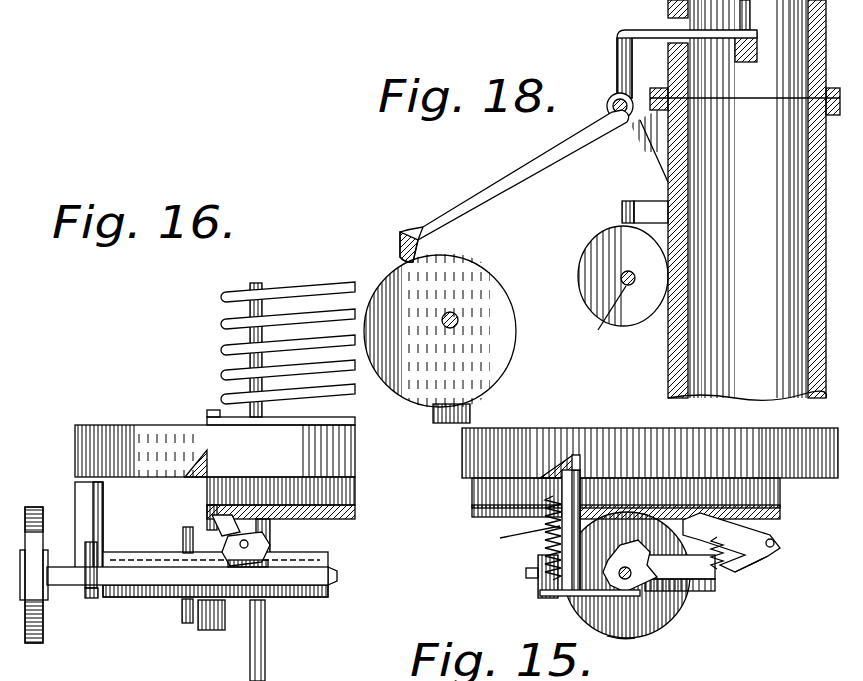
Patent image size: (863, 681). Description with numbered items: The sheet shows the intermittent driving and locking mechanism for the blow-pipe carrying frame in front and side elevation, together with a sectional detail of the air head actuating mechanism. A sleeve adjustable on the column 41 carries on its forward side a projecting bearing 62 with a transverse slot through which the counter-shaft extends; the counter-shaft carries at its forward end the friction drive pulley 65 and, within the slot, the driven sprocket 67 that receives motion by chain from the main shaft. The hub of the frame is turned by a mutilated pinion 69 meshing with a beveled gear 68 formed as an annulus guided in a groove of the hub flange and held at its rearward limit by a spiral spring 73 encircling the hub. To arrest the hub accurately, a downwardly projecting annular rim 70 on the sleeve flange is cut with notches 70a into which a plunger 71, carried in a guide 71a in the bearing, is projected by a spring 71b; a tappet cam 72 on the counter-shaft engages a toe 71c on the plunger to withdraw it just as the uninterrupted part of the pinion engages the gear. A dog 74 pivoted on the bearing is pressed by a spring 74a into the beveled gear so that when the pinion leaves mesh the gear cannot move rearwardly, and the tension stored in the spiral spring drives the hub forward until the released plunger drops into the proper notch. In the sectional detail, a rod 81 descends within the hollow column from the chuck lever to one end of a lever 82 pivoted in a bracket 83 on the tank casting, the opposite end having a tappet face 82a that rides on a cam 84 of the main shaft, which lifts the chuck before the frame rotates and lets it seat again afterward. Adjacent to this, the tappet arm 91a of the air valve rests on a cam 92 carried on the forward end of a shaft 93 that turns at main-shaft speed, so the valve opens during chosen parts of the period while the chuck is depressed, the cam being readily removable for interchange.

In FIG. 16, the column 41 is at (288, 288).
In FIG. 16, the projecting bearing 62 is at (150, 553).
In FIG. 15, the projecting bearing 62 is at (652, 634).
In FIG. 16, the friction drive pulley 65 is at (70, 592).
In FIG. 15, the friction drive pulley 65 is at (618, 638).
In FIG. 16, the driven sprocket 67 is at (180, 609).
In FIG. 16, the beveled gear 68 is at (348, 516).
In FIG. 15, the beveled gear 68 is at (626, 498).
In FIG. 16, the pinion 69 is at (211, 632).
In FIG. 15, the pinion 69 is at (668, 618).
In FIG. 16, the annular rim 70 is at (146, 432).
In FIG. 15, the annular rim 70 is at (650, 453).
In FIG. 16, the notch 70a is at (210, 466).
In FIG. 15, the notch 70a is at (578, 463).
In FIG. 16, the plunger 71 is at (78, 485).
In FIG. 15, the plunger 71 is at (570, 455).
In FIG. 16, the guide 71a is at (98, 511).
In FIG. 15, the guide 71a is at (515, 538).
In FIG. 15, the spring 71b is at (544, 556).
In FIG. 16, the toe 71c is at (93, 604).
In FIG. 15, the toe 71c is at (545, 597).
In FIG. 16, the tappet cam 72 is at (88, 560).
In FIG. 15, the tappet cam 72 is at (660, 600).
In FIG. 16, the spiral spring 73 is at (226, 348).
In FIG. 16, the dog 74 is at (212, 524).
In FIG. 15, the dog 74 is at (774, 548).
In FIG. 15, the spring 74a is at (740, 572).
In FIG. 18, the rod 81 is at (752, 40).
In FIG. 18, the lever 82 is at (640, 30).
In FIG. 18, the tappet face 82a is at (425, 250).
In FIG. 18, the bracket 83 is at (628, 126).
In FIG. 18, the cam 84 is at (478, 290).
In FIG. 18, the tappet arm 91a is at (648, 204).
In FIG. 18, the cam 92 is at (606, 256).
In FIG. 18, the shaft 93 is at (604, 323).